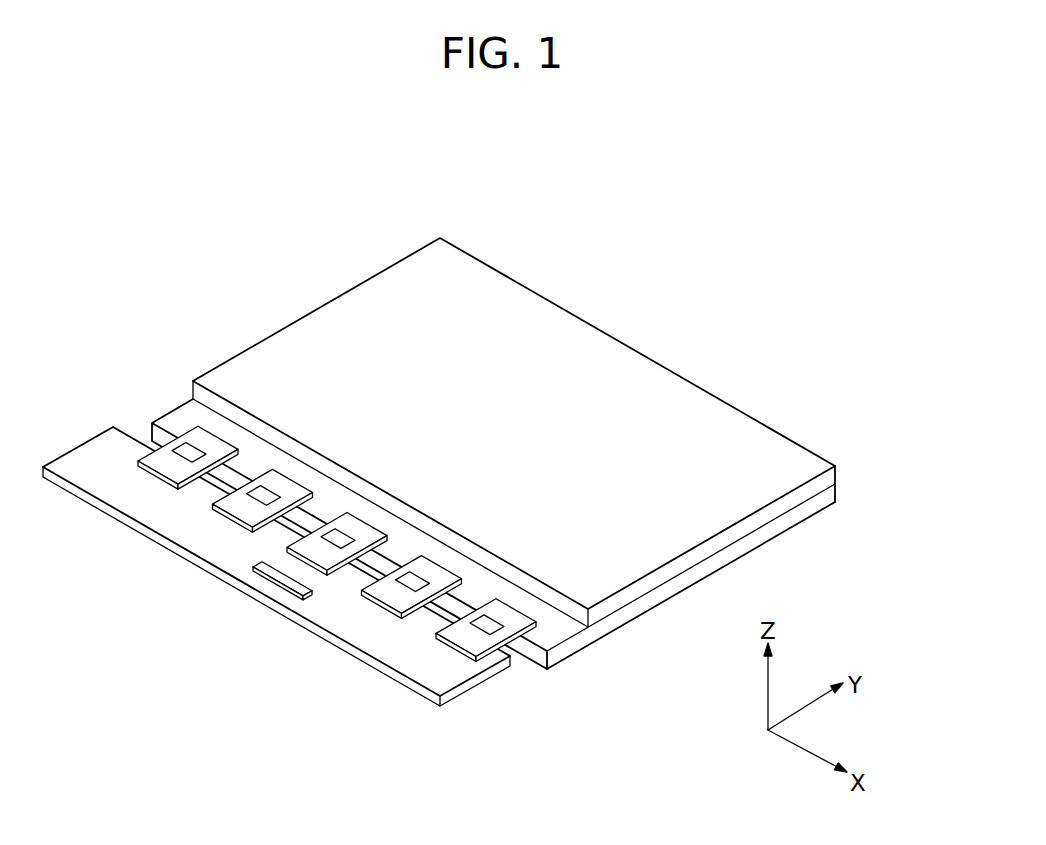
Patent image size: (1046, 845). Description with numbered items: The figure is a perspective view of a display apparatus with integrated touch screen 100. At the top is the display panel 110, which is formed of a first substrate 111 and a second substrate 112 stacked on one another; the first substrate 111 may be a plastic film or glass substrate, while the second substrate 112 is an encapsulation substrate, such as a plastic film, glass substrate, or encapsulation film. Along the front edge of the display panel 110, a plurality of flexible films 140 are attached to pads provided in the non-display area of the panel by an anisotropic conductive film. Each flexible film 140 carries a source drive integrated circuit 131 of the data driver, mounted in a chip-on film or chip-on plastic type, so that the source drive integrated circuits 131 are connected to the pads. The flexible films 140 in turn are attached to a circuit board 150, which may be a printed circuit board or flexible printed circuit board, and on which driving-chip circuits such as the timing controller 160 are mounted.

The display apparatus with integrated touch screen 100 is at (504, 496).
The display panel 110 is at (558, 453).
The first substrate 111 is at (836, 495).
The second substrate 112 is at (836, 472).
The source drive integrated circuit 131 is at (487, 628).
The flexible film 140 is at (458, 635).
The circuit board 150 is at (393, 650).
The timing controller 160 is at (285, 580).